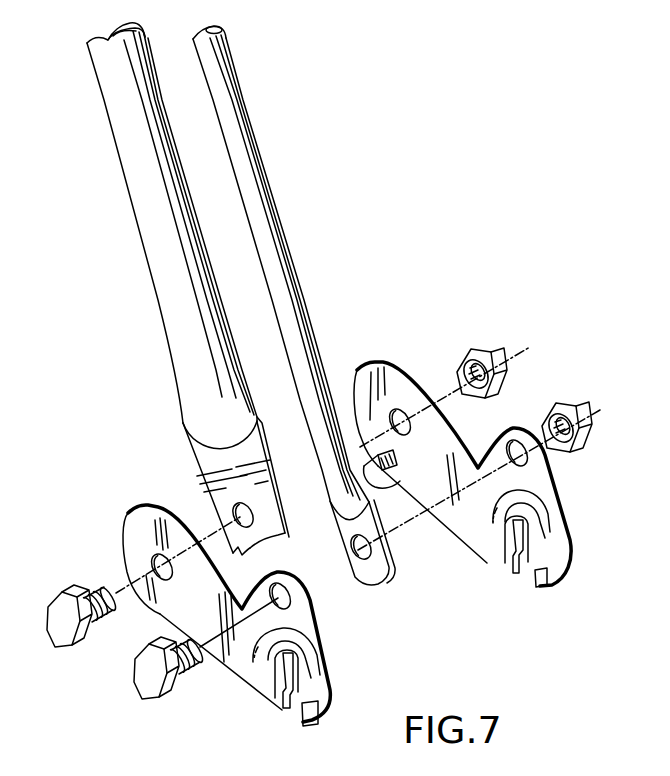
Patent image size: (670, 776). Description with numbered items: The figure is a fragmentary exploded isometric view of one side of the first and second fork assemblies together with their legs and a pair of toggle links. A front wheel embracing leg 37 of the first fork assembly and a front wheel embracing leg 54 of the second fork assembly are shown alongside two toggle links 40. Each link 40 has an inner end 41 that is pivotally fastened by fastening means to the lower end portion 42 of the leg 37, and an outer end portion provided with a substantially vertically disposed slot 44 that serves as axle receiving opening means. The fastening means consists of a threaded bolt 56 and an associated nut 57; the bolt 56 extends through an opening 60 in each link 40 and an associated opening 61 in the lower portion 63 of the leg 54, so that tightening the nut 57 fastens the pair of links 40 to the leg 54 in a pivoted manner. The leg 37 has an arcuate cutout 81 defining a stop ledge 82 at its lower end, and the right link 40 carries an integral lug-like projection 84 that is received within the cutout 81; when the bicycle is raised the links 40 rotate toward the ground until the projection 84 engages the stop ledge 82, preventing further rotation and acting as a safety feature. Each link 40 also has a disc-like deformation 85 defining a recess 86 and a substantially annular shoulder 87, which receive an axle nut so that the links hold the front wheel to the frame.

The front wheel embracing leg 37 is at (168, 310).
The front wheel embracing leg 54 is at (247, 110).
The lower end portion 42 is at (183, 394).
The lower portion 63 is at (298, 370).
The opening 61 is at (230, 507).
The arcuate cutout 81 is at (270, 535).
The stop ledge 82 is at (358, 550).
The lug-like projection 84 is at (389, 485).
The toggle link 40 is at (127, 517).
The inner end 41 is at (125, 545).
The opening 60 is at (587, 470).
The slot 44 is at (310, 690).
The disc-like deformation 85 is at (272, 663).
The recess 86 is at (276, 670).
The annular shoulder 87 is at (322, 721).
The threaded bolt 56 is at (72, 640).
The nut 57 is at (484, 348).